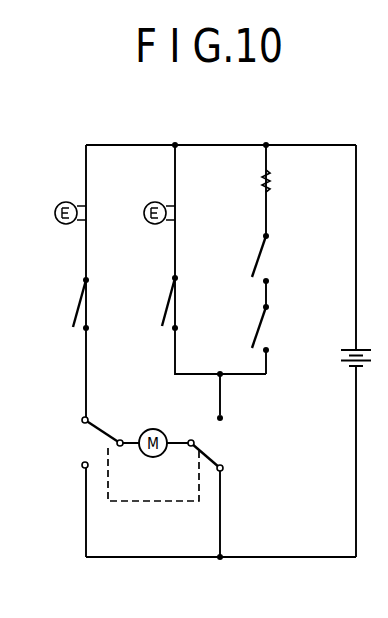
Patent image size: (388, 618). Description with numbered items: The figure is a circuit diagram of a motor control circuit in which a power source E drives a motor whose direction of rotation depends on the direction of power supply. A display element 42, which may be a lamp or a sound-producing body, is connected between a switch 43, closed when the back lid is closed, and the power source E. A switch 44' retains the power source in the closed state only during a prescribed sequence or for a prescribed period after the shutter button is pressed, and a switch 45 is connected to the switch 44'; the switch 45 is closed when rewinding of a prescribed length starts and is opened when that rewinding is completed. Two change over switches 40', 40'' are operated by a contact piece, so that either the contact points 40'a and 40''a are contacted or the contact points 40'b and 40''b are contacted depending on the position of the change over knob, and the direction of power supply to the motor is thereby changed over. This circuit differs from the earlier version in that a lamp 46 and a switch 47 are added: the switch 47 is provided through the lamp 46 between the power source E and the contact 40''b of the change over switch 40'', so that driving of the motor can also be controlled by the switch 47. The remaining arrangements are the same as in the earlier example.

The display element 42 is at (88, 214).
The lamp 46 is at (177, 214).
The switch 43 is at (88, 313).
The switch 47 is at (177, 313).
The switch 44' is at (280, 258).
The switch 45 is at (268, 338).
The change over switch 40' is at (108, 416).
The change over switch 40'' is at (197, 427).
The contact point 40'a is at (60, 429).
The contact point 40'b is at (60, 467).
The contact point 40''a is at (250, 474).
The contact point 40''b is at (250, 415).
The power source E is at (378, 361).